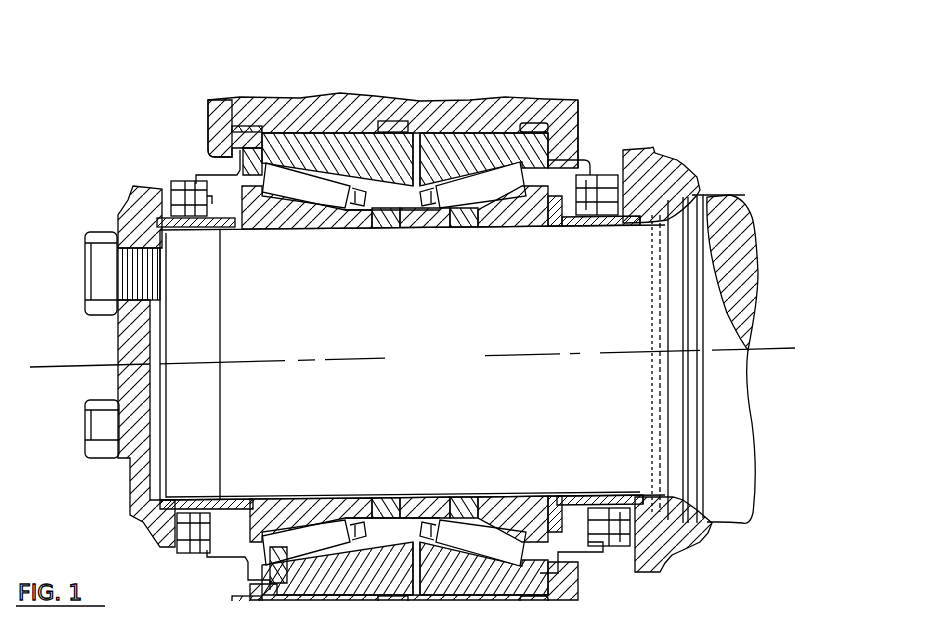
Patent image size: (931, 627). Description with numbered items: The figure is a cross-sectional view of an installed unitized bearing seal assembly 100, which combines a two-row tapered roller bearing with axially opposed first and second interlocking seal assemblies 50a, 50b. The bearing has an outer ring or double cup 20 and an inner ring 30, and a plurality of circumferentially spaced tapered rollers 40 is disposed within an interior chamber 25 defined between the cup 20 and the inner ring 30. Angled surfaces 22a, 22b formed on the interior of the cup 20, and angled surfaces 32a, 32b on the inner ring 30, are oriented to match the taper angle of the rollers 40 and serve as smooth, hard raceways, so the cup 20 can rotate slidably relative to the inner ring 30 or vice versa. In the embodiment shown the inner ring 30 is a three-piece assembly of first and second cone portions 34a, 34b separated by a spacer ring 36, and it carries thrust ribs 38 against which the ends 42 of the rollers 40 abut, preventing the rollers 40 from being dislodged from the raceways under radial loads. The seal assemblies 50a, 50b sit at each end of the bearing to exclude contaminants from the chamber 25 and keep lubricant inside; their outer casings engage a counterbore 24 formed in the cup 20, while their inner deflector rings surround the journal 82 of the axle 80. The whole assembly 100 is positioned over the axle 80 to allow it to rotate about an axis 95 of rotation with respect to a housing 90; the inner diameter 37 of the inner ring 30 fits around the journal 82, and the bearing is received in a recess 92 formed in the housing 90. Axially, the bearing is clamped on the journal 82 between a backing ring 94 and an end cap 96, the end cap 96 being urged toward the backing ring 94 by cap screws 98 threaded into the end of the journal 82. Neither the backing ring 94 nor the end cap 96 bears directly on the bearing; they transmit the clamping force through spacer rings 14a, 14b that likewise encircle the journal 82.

The unitized bearing seal assembly 100 is at (156, 135).
The outer ring or double cup 20 is at (457, 140).
The angled surface 22a is at (336, 150).
The angled surface 22b is at (510, 150).
The counterbore 24 is at (246, 157).
The interior chamber 25 is at (393, 218).
The inner ring 30 is at (362, 215).
The angled surface 32a is at (282, 212).
The angled surface 32b is at (515, 205).
The first cone portion 34a is at (303, 212).
The second cone portion 34b is at (465, 220).
The spacer ring 36 is at (373, 228).
The inner diameter 37 is at (602, 222).
The thrust ribs 38 is at (544, 205).
The tapered rollers 40 is at (314, 203).
The ends of rollers 42 is at (548, 125).
The first interlocking seal assembly 50a is at (173, 177).
The second interlocking seal assembly 50b is at (598, 134).
The axle 80 is at (723, 498).
The journal 82 is at (458, 375).
The housing 90 is at (578, 102).
The recess 92 is at (376, 135).
The backing ring 94 is at (625, 160).
The axis of rotation 95 is at (38, 368).
The end cap 96 is at (128, 493).
The cap screws 98 is at (84, 438).
The spacer ring 14a is at (243, 233).
The spacer ring 14b is at (645, 225).